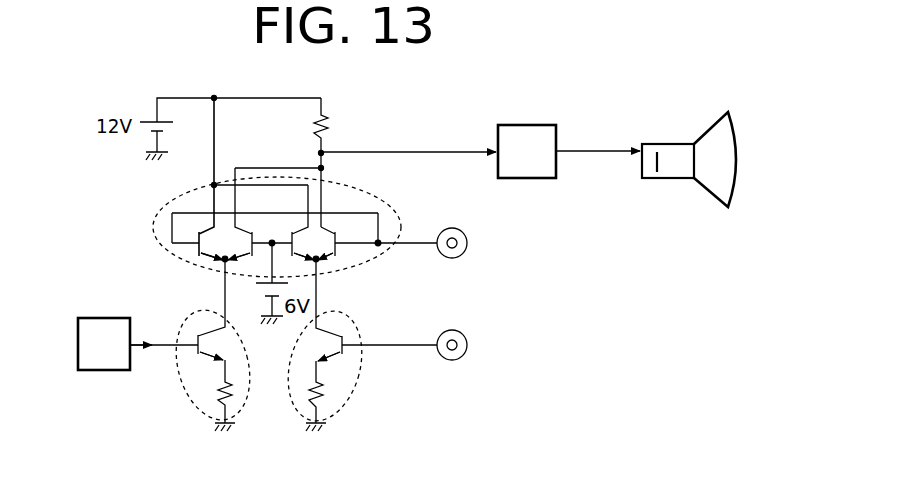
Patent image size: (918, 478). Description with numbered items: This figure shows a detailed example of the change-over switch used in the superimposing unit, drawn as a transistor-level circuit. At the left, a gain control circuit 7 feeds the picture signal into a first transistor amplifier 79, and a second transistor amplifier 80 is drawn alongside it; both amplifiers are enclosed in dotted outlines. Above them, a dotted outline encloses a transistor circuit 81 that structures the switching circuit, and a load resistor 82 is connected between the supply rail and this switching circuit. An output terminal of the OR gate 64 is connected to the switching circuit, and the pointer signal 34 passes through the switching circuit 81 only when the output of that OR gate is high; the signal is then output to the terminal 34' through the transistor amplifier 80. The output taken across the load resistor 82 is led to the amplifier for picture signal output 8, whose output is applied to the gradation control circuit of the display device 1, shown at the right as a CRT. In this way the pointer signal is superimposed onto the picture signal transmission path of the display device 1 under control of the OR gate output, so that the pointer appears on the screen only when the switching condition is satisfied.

The display device 1 is at (712, 128).
The gain control circuit 7 is at (100, 318).
The amplifier for picture signal output 8 is at (537, 125).
The pointer signal 34 is at (389, 324).
The terminal 34' is at (486, 345).
The output terminal of the OR gate 64 is at (467, 243).
The transistor amplifier 79 is at (185, 376).
The transistor amplifier 80 is at (353, 385).
The transistor circuit 81 is at (154, 222).
The load resistor 82 is at (330, 128).